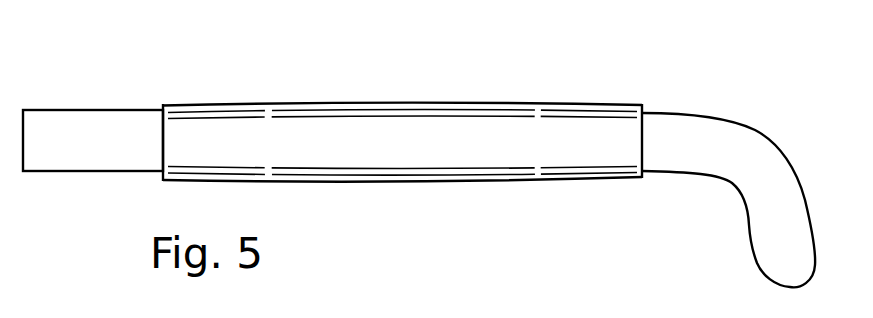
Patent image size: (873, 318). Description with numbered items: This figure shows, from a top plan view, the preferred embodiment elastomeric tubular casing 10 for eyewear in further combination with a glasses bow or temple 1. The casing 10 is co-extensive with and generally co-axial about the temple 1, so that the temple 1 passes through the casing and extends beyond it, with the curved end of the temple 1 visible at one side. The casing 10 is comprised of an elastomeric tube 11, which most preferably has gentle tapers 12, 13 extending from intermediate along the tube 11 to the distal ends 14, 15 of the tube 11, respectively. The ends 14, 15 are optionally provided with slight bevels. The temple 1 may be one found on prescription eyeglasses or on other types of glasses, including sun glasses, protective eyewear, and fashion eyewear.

The elastomeric tubular casing 10 is at (630, 36).
The temple 1 is at (684, 122).
The elastomeric tube 11 is at (432, 160).
The taper 12 is at (590, 178).
The taper 13 is at (198, 104).
The distal end 14 is at (644, 175).
The distal end 15 is at (162, 180).